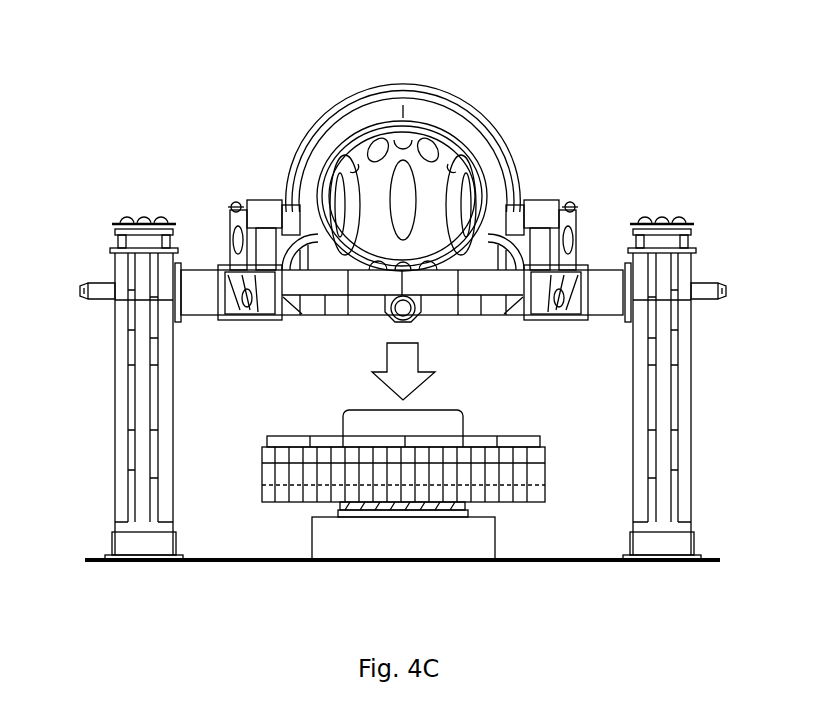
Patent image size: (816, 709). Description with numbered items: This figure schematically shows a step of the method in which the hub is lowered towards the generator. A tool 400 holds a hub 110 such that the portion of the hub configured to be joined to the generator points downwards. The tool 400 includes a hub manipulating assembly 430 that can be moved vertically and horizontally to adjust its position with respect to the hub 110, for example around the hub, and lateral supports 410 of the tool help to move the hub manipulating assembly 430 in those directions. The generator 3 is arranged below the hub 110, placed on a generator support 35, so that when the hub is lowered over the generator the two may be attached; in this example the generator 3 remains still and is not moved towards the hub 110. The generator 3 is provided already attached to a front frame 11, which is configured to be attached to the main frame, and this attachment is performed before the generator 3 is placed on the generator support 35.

The tool 400 is at (617, 166).
The hub 110 is at (460, 110).
The lateral supports 410 is at (630, 418).
The hub manipulating assembly 430 is at (251, 324).
The generator 3 is at (261, 468).
The front frame 11 is at (445, 418).
The generator support 35 is at (422, 540).